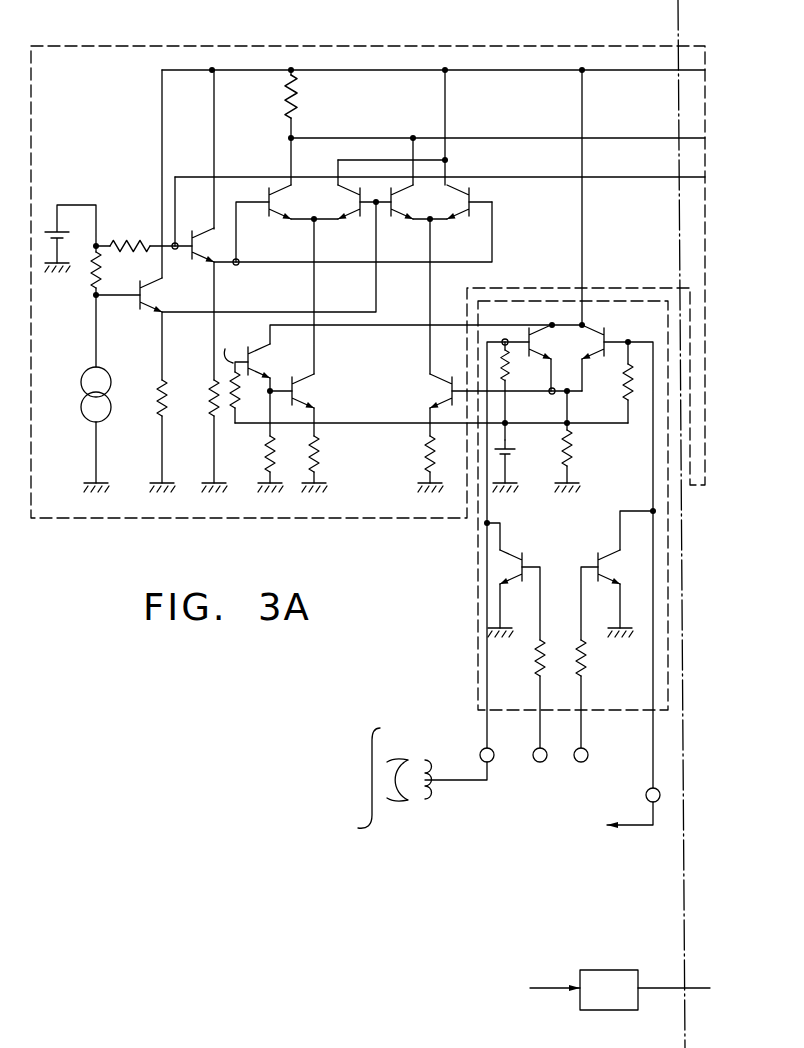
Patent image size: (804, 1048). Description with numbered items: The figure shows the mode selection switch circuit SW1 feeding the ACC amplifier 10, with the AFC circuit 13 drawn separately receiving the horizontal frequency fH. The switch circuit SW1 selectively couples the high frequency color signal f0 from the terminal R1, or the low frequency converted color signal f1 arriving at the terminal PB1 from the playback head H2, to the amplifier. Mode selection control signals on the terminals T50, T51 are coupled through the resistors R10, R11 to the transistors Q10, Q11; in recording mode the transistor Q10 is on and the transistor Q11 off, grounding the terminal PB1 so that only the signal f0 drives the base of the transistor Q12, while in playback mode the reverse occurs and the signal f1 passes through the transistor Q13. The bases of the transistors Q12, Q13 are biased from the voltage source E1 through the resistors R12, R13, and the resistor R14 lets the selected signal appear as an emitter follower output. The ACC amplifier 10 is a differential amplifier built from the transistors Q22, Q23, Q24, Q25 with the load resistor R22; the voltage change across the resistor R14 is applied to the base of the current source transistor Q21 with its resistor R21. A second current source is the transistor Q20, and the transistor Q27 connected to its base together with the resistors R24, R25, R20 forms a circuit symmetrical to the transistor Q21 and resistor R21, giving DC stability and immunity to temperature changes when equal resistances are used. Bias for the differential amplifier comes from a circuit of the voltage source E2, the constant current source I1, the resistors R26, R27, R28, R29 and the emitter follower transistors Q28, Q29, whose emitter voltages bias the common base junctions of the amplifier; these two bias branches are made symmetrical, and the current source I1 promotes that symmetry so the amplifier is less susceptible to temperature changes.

The ACC amplifier 10 is at (330, 46).
The AFC circuit 13 is at (617, 970).
The mode selection switch circuit SW1 is at (478, 560).
The load resistor R22 is at (310, 127).
The resistor R26 is at (144, 232).
The resistor R27 is at (117, 270).
The resistor R28 is at (145, 433).
The resistor R29 is at (199, 436).
The resistor R24 is at (234, 374).
The resistor R25 is at (252, 464).
The resistor R20 is at (330, 464).
The resistor R21 is at (413, 464).
The resistor R12 is at (524, 391).
The resistor R13 is at (604, 382).
The resistor R14 is at (585, 441).
The resistor R10 is at (519, 694).
The resistor R11 is at (601, 694).
The terminal R1 is at (646, 797).
The transistor Q22 is at (287, 223).
The transistor Q23 is at (364, 220).
The transistor Q24 is at (419, 220).
The transistor Q25 is at (468, 220).
The transistor Q28 is at (332, 291).
The transistor Q29 is at (131, 310).
The transistor Q27 is at (279, 386).
The transistor Q20 is at (325, 405).
The transistor Q21 is at (489, 405).
The transistor Q12 is at (536, 424).
The transistor Q13 is at (610, 556).
The transistor Q10 is at (513, 580).
The transistor Q11 is at (617, 575).
The voltage source E1 is at (518, 466).
The voltage source E2 is at (70, 238).
The constant current source I1 is at (80, 393).
The terminal T50 is at (540, 774).
The terminal T51 is at (586, 774).
The terminal PB1 is at (459, 756).
The head H2 is at (397, 786).
The low frequency converted color signal f1 is at (500, 635).
The high frequency color signal f0 is at (638, 734).
The horizontal frequency fH is at (507, 992).